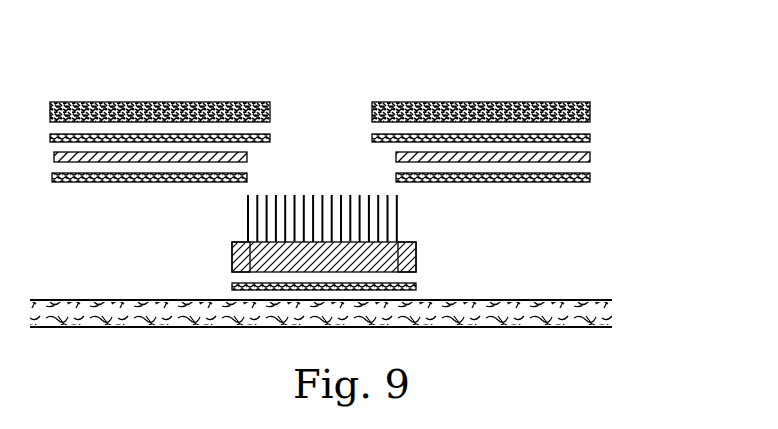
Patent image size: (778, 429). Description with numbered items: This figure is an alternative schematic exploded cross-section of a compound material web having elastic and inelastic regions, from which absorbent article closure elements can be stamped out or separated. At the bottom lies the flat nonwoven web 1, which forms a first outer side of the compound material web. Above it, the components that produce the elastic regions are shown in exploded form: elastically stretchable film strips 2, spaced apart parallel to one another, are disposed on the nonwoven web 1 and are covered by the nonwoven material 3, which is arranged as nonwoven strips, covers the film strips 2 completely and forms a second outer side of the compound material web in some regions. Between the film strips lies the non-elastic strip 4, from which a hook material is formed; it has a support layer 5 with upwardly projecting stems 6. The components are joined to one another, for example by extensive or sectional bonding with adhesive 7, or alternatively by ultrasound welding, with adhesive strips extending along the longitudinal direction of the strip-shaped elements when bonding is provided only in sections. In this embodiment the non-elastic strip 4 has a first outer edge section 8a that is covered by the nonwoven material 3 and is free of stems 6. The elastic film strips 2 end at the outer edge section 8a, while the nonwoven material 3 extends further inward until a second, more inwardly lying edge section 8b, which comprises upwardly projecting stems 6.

The nonwoven web 1 is at (552, 301).
The elastically stretchable film strips 2 is at (590, 157).
The nonwoven material 3 is at (590, 110).
The non-elastic strip 4 is at (208, 272).
The support layer 5 is at (233, 244).
The stems 6 is at (397, 210).
The adhesive 7 is at (587, 182).
The first outer edge section 8a is at (233, 259).
The second edge section 8b is at (233, 284).